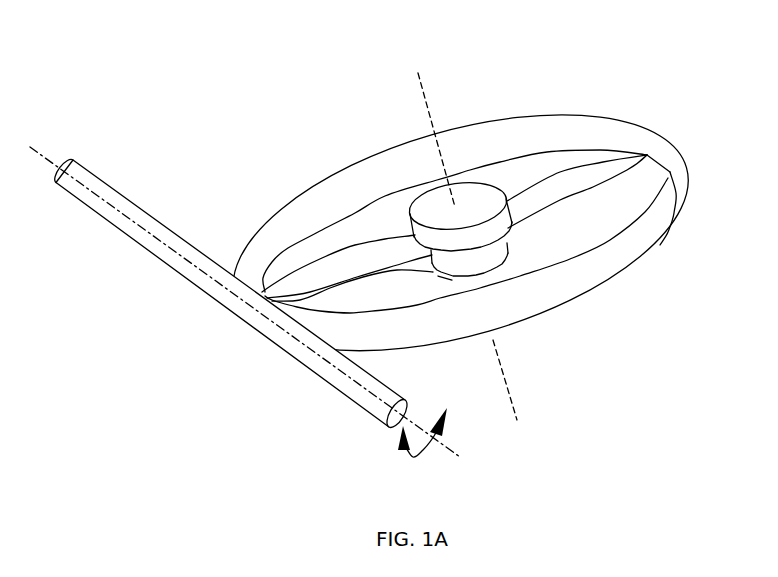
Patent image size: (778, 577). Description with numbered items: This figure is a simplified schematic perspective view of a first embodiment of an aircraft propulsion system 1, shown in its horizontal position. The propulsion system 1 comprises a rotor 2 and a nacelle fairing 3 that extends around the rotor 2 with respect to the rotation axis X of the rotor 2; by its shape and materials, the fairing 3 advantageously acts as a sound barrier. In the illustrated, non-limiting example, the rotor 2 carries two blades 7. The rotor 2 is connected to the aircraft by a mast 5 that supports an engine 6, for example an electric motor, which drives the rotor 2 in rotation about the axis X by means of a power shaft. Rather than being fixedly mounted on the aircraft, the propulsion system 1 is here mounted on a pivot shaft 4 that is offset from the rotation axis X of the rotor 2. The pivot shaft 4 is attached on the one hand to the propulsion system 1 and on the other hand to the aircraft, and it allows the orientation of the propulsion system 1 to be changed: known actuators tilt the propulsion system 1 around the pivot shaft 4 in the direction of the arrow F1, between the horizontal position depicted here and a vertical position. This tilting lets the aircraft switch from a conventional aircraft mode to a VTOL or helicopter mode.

The propulsion system 1 is at (461, 204).
The rotor 2 is at (501, 176).
The nacelle fairing 3 is at (645, 238).
The pivot shaft 4 is at (92, 210).
The mast 5 is at (445, 287).
The engine 6 is at (497, 258).
The blades 7 is at (577, 187).
The rotation axis X is at (467, 242).
The arrow F1 is at (422, 447).